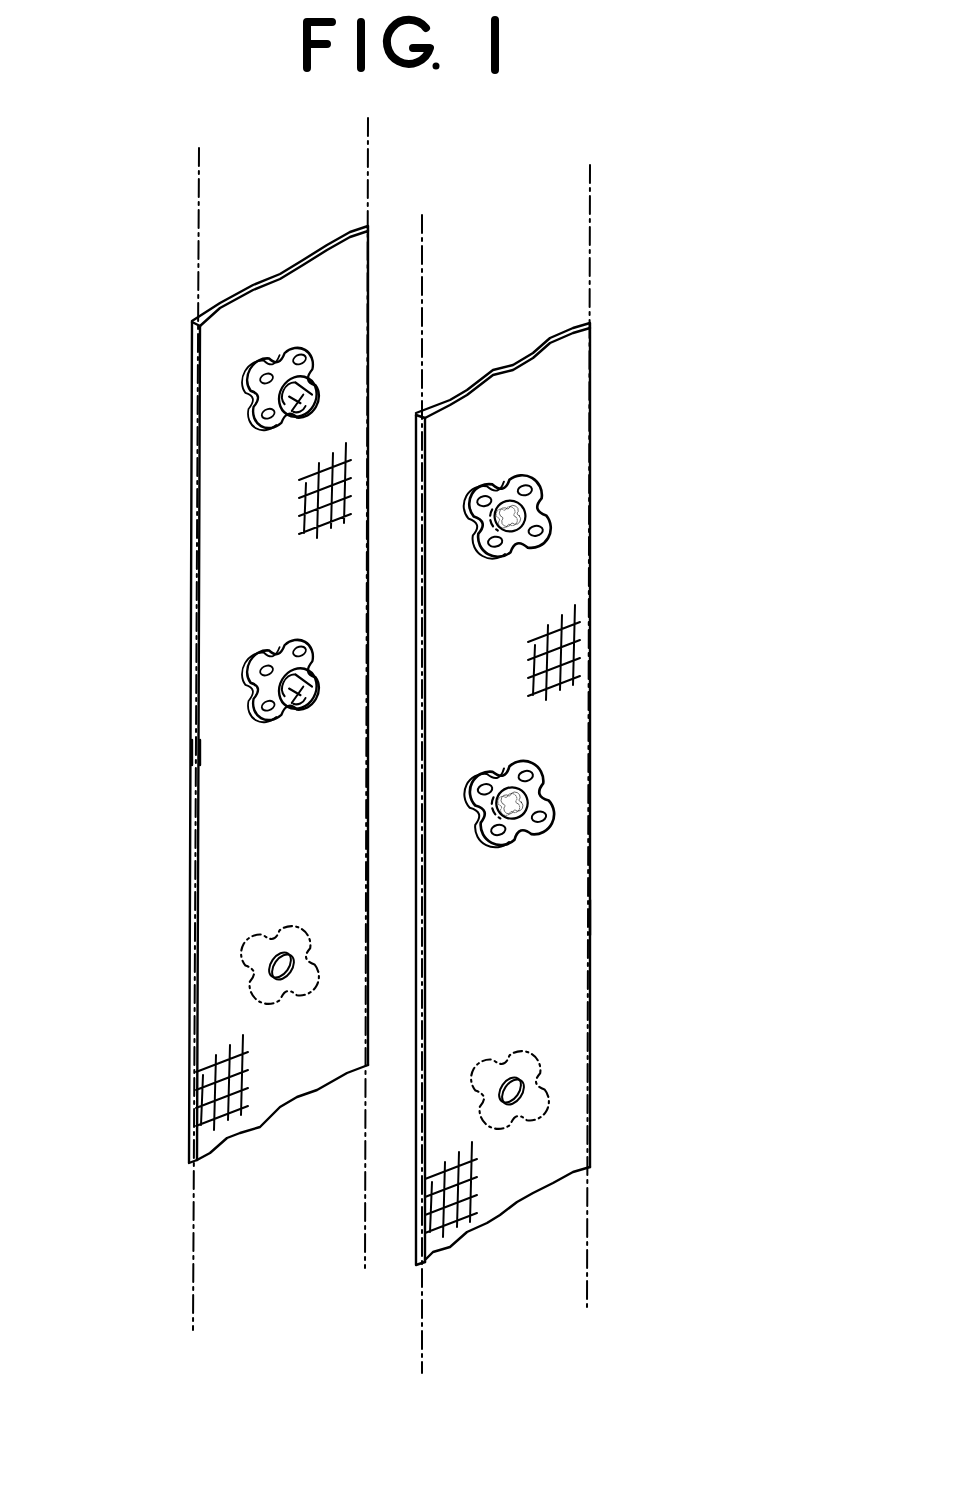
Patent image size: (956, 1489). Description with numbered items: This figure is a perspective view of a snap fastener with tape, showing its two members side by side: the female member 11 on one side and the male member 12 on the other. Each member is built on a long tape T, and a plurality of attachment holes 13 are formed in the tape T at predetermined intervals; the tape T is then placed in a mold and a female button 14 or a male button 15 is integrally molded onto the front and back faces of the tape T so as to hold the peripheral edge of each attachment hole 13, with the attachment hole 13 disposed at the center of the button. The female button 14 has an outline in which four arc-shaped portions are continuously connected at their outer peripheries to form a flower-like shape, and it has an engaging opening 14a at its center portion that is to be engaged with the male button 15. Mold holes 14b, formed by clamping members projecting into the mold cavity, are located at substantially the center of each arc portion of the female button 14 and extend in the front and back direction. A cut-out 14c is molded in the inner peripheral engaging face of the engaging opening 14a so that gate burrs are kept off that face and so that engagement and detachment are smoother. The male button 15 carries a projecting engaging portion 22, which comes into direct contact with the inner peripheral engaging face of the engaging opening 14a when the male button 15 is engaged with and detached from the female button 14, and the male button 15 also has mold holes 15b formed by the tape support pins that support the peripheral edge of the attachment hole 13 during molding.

The female member 11 is at (600, 729).
The male member 12 is at (186, 607).
The attachment hole 13 is at (280, 963).
The female button 14 is at (563, 522).
The engaging opening 14a is at (530, 500).
The mold holes 14b is at (540, 532).
The cut-out 14c is at (528, 517).
The male button 15 is at (223, 365).
The mold holes 15b is at (304, 352).
The engaging portion 22 is at (300, 416).
The tape T is at (230, 752).